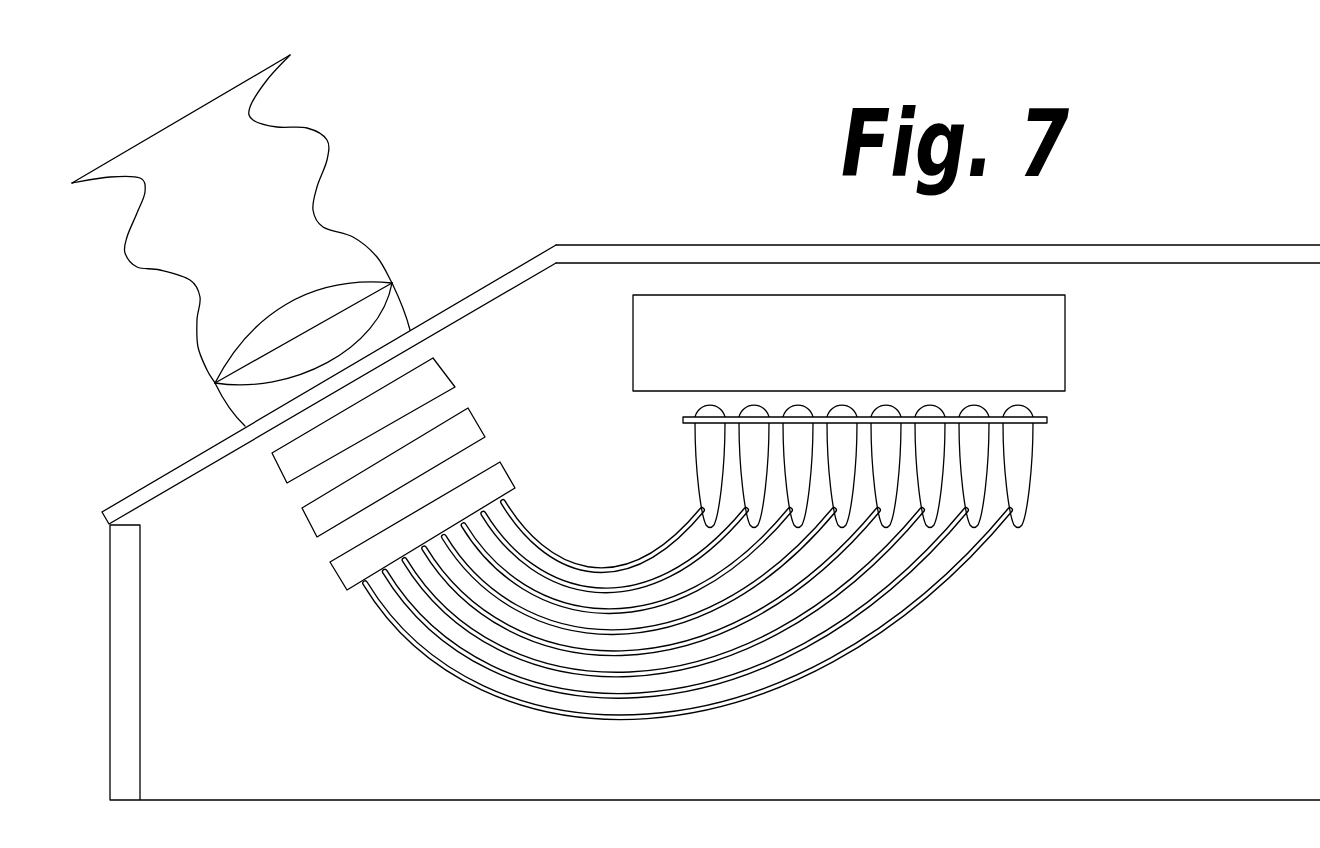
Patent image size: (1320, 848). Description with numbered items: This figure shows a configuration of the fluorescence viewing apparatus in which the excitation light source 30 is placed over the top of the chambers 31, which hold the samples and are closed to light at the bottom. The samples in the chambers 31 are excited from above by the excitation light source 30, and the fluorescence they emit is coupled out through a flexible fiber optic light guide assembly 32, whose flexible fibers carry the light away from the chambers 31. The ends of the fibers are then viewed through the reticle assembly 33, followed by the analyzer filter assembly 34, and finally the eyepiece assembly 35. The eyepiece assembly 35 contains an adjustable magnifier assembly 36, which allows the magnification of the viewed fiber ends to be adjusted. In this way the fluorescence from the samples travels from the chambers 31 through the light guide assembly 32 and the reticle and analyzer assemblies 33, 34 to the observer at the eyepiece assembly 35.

The excitation light source 30 is at (1065, 362).
The chambers 31 is at (1033, 482).
The flexible fiber optic light guide assembly 32 is at (913, 618).
The reticle assembly 33 is at (343, 587).
The analyzer filter assembly 34 is at (283, 476).
The eyepiece assembly 35 is at (150, 273).
The adjustable magnifier assembly 36 is at (237, 358).